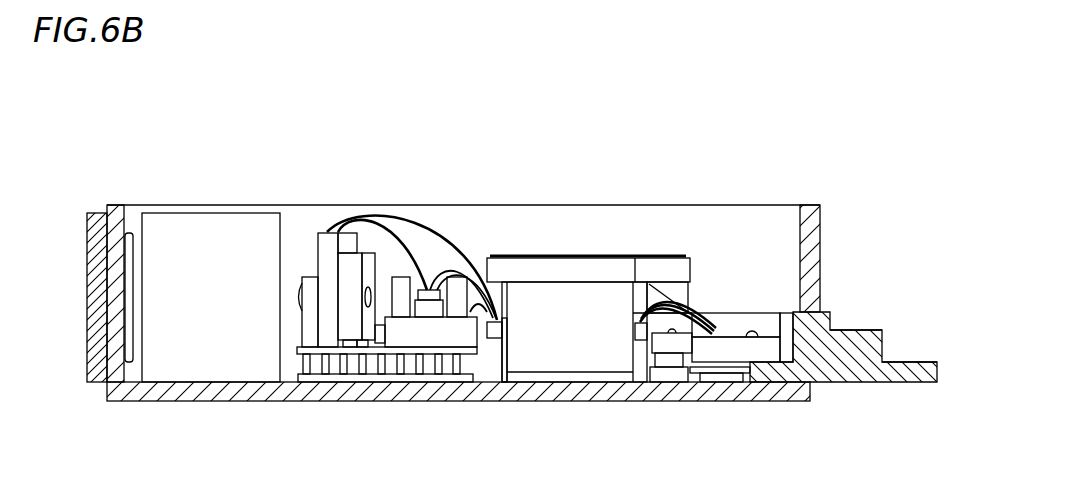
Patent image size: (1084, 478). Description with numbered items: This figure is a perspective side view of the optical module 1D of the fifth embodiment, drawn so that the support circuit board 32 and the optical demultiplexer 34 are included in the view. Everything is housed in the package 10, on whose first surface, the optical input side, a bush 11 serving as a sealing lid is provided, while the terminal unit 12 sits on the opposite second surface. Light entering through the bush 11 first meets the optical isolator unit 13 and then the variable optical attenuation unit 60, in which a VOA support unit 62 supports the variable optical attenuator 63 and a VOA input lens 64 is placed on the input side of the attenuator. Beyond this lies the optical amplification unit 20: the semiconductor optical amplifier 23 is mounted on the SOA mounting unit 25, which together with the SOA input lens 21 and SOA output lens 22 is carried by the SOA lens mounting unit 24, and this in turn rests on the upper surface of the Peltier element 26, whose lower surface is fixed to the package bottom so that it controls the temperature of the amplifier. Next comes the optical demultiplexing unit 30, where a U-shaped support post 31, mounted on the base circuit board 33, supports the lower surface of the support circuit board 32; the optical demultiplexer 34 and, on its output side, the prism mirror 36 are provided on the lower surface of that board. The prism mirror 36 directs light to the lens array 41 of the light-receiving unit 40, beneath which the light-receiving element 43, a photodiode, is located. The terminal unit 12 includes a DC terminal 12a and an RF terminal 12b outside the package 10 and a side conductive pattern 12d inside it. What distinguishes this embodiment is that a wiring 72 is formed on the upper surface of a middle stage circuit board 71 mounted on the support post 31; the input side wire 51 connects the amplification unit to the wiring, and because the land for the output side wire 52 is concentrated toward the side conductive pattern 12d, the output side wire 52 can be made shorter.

The optical module 1D is at (231, 158).
The package 10 is at (132, 390).
The bush 11 is at (92, 297).
The terminal unit 12 is at (849, 309).
The DC terminal 12a is at (865, 330).
The RF terminal 12b is at (907, 363).
The side conductive pattern 12d is at (760, 340).
The optical isolator unit 13 is at (195, 340).
The optical amplification unit 20 is at (419, 302).
The SOA input lens 21 is at (427, 306).
The SOA output lens 22 is at (467, 278).
The semiconductor optical amplifier 23 is at (462, 330).
The SOA lens mounting unit 24 is at (397, 340).
The SOA mounting unit 25 is at (455, 300).
The Peltier element 26 is at (333, 363).
The optical demultiplexing unit 30 is at (601, 295).
The support post 31 is at (575, 337).
The support circuit board 32 is at (540, 267).
The base circuit board 33 is at (608, 377).
The optical demultiplexer 34 is at (640, 283).
The prism mirror 36 is at (672, 287).
The light-receiving unit 40 is at (774, 264).
The lens array 41 is at (667, 345).
The light-receiving element 43 is at (690, 375).
The input side wire 51 is at (402, 233).
The output side wire 52 is at (700, 317).
The variable optical attenuation unit 60 is at (339, 231).
The VOA support unit 62 is at (330, 250).
The variable optical attenuator 63 is at (370, 255).
The VOA input lens 64 is at (308, 278).
The middle stage circuit board 71 is at (496, 332).
The wiring 72 is at (504, 350).